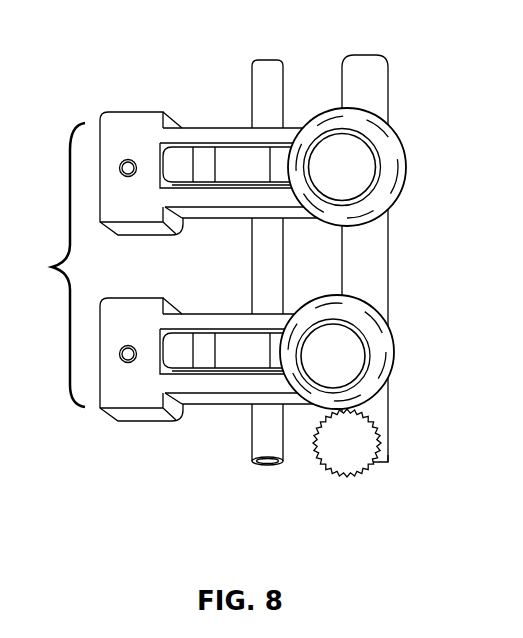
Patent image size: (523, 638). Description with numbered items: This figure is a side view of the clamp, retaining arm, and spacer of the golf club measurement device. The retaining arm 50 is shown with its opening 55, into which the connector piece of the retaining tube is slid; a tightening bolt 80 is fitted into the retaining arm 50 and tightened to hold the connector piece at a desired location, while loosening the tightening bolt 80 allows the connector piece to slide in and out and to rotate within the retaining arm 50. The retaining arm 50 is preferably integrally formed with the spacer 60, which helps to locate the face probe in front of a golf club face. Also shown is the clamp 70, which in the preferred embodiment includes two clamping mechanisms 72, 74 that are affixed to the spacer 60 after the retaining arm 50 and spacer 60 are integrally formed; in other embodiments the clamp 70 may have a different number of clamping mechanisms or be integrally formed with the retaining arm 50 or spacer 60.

The retaining arm 50 is at (375, 77).
The opening 55 is at (385, 463).
The spacer 60 is at (265, 72).
The clamp 70 is at (213, 272).
The clamping mechanism 72 is at (122, 117).
The clamping mechanism 74 is at (127, 393).
The tightening bolt 80 is at (377, 438).